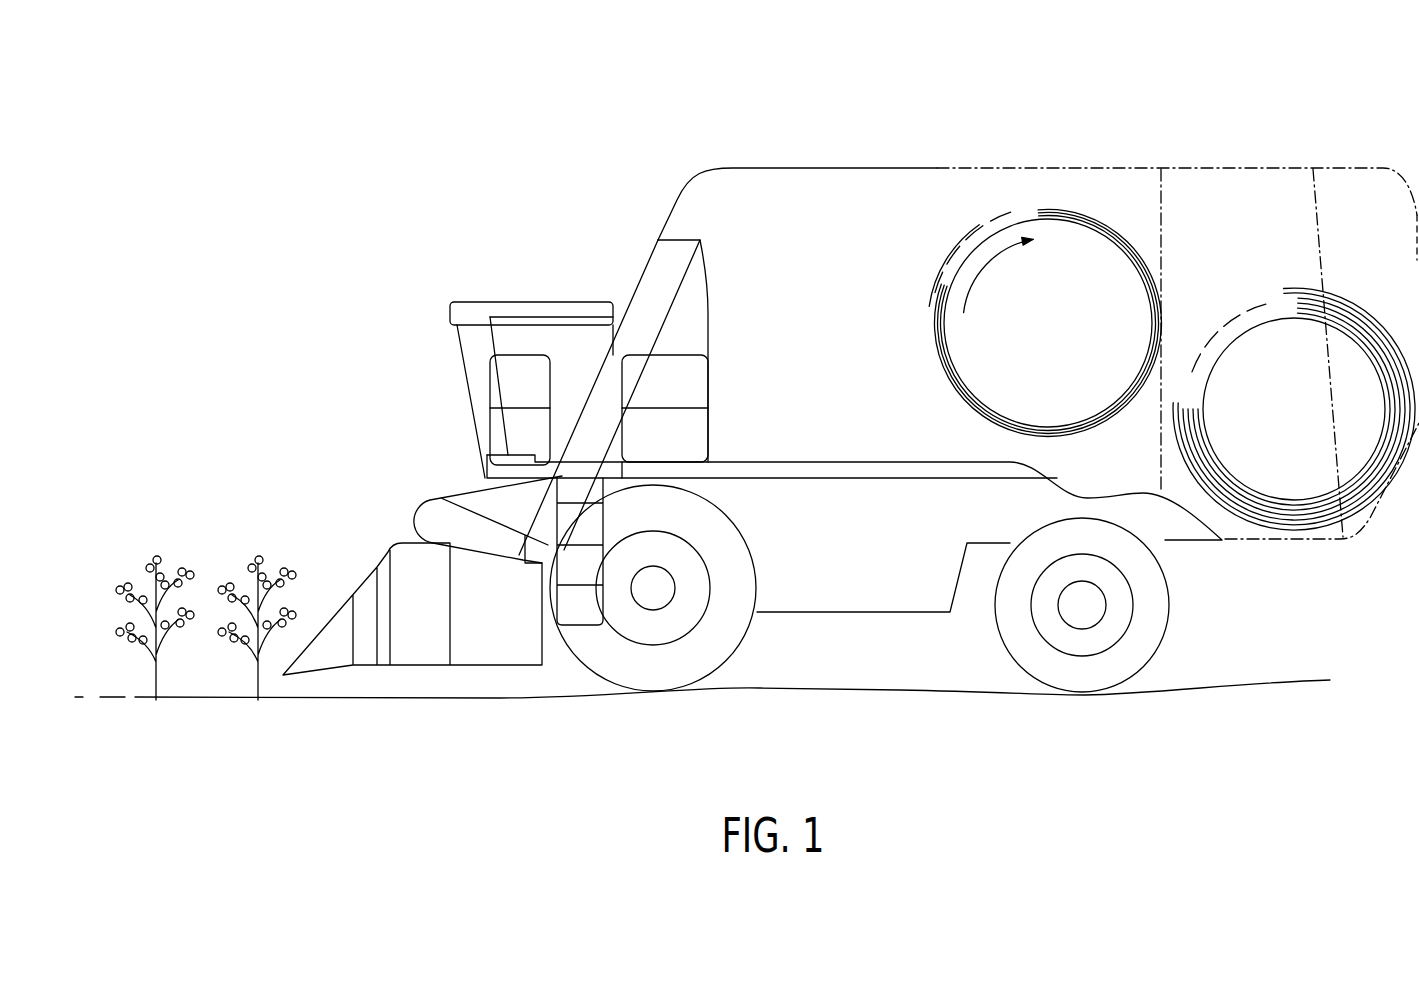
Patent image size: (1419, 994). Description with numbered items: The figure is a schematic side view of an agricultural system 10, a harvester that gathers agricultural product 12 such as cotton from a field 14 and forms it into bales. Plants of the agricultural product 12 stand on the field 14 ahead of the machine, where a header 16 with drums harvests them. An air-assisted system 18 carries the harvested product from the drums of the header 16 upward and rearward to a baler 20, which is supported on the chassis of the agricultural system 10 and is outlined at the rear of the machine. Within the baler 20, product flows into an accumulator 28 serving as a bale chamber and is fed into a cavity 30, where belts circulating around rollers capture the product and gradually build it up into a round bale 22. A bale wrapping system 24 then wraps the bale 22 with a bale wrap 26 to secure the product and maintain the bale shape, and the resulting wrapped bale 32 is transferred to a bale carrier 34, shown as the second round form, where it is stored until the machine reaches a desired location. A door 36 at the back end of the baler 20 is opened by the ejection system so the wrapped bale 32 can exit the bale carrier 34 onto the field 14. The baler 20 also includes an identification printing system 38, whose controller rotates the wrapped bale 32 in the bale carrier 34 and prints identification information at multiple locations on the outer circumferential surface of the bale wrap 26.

The agricultural system 10 is at (698, 152).
The agricultural product 12 is at (230, 660).
The field 14 is at (730, 690).
The header 16 is at (402, 547).
The air-assisted system 18 is at (650, 293).
The baler 20 is at (1165, 143).
The bale 22 is at (1036, 335).
The bale wrapping system 24 is at (950, 217).
The bale wrap 26 is at (1128, 243).
The accumulator 28 is at (933, 248).
The cavity 30 is at (938, 383).
The wrapped bale 32 is at (1278, 265).
The bale carrier 34 is at (1286, 557).
The door 36 is at (1396, 172).
The identification printing system 38 is at (1148, 420).